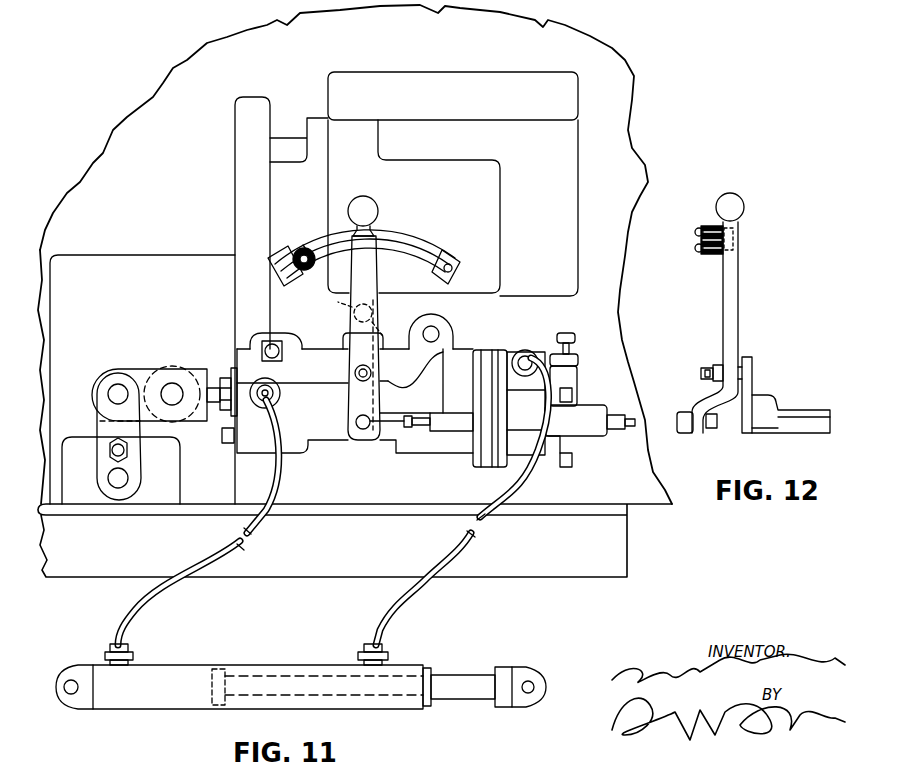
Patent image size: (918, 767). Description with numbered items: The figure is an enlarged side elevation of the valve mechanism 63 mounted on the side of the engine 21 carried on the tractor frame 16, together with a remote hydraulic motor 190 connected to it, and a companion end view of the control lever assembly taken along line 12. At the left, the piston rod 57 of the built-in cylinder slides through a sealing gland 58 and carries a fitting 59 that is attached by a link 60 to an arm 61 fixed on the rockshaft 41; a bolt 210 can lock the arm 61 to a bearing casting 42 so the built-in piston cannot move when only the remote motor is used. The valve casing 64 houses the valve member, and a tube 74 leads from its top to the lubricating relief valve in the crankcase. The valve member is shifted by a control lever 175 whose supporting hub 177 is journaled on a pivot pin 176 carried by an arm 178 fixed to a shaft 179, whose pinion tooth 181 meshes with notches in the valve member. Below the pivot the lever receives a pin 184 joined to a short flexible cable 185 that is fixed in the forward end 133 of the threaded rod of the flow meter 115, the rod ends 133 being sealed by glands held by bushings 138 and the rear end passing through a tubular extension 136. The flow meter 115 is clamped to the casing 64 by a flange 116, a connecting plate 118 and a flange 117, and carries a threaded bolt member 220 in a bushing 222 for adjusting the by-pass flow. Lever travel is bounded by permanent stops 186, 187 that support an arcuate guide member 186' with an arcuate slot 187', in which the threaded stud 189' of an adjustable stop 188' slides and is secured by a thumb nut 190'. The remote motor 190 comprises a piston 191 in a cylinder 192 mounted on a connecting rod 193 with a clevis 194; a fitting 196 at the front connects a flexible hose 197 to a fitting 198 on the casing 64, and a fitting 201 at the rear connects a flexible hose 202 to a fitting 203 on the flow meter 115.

In FIG. 11, the engine 21 is at (355, 291).
In FIG. 11, the frame 16 is at (626, 580).
In FIG. 11, the line 12— 12 is at (393, 212).
In FIG. 11, the fitting 198 is at (250, 345).
In FIG. 11, the link 60 is at (144, 380).
In FIG. 11, the fitting 59 is at (182, 368).
In FIG. 11, the piston rod 57 is at (208, 385).
In FIG. 11, the sealing gland 58 is at (228, 378).
In FIG. 11, the arm 61 is at (100, 422).
In FIG. 11, the bolt 210 is at (122, 450).
In FIG. 11, the rockshaft 41 is at (108, 478).
In FIG. 11, the bearing casting 42 is at (170, 476).
In FIG. 11, the valve casing 64 is at (306, 452).
In FIG. 11, the valve mechanism 63 is at (300, 336).
In FIG. 11, the permanent stop 186 is at (345, 334).
In FIG. 11, the flexible hose 197 is at (152, 595).
In FIG. 11, the tube 74 is at (348, 316).
In FIG. 11, the pivot pin 176 is at (355, 392).
In FIG. 12, the pivot pin 176 is at (700, 368).
In FIG. 11, the pin 184 is at (360, 440).
In FIG. 12, the pin 184 is at (686, 434).
In FIG. 11, the flexible cable 185 is at (395, 444).
In FIG. 12, the flexible cable 185 is at (714, 430).
In FIG. 11, the ends of the rod 133 is at (412, 430).
In FIG. 11, the bushing 138 is at (445, 432).
In FIG. 11, the control lever 175 is at (370, 263).
In FIG. 12, the control lever 175 is at (742, 260).
In FIG. 11, the threaded stud 189' is at (291, 244).
In FIG. 12, the threaded stud 189' is at (677, 242).
In FIG. 11, the thumb nut 190' is at (314, 218).
In FIG. 12, the thumb nut 190' is at (682, 207).
In FIG. 11, the arcuate guide member 186' is at (457, 234).
In FIG. 12, the arcuate guide member 186' is at (697, 279).
In FIG. 11, the arcuate slot 187' is at (467, 250).
In FIG. 11, the arm 178 is at (383, 308).
In FIG. 12, the arm 178 is at (750, 392).
In FIG. 11, the permanent stop 187 is at (413, 298).
In FIG. 11, the flange 116 is at (476, 350).
In FIG. 11, the connecting plate 118 is at (488, 350).
In FIG. 11, the flange 117 is at (502, 350).
In FIG. 11, the tubular extension 136 is at (598, 436).
In FIG. 11, the flow meter 115 is at (548, 452).
In FIG. 11, the fitting 203 is at (513, 356).
In FIG. 11, the threaded bolt member 220 is at (574, 334).
In FIG. 11, the bushing 222 is at (578, 358).
In FIG. 11, the flexible hose 202 is at (492, 522).
In FIG. 11, the remote hydraulic motor 190 is at (301, 659).
In FIG. 11, the cylinder 192 is at (155, 710).
In FIG. 11, the piston 191 is at (210, 678).
In FIG. 11, the connecting rod 193 is at (462, 676).
In FIG. 11, the clevis 194 is at (528, 662).
In FIG. 11, the fitting 196 is at (133, 650).
In FIG. 11, the fitting 201 is at (386, 648).
In FIG. 12, the adjustable stop 188' is at (750, 229).
In FIG. 12, the supporting hub 177 is at (720, 362).
In FIG. 12, the pinion tooth 181 is at (790, 410).
In FIG. 12, the shaft 179 is at (792, 434).